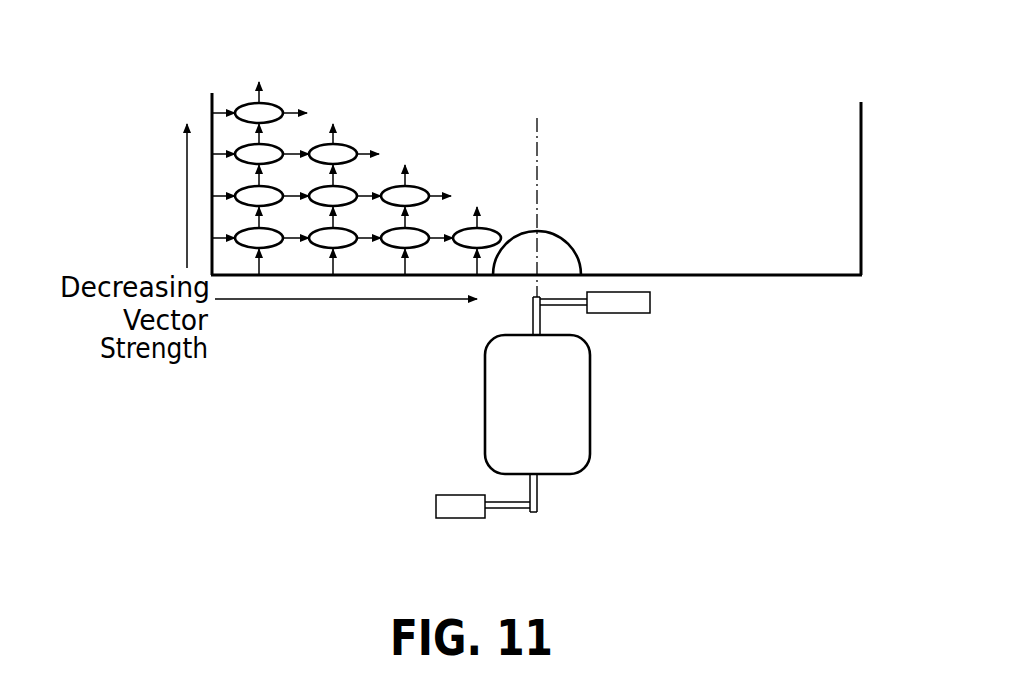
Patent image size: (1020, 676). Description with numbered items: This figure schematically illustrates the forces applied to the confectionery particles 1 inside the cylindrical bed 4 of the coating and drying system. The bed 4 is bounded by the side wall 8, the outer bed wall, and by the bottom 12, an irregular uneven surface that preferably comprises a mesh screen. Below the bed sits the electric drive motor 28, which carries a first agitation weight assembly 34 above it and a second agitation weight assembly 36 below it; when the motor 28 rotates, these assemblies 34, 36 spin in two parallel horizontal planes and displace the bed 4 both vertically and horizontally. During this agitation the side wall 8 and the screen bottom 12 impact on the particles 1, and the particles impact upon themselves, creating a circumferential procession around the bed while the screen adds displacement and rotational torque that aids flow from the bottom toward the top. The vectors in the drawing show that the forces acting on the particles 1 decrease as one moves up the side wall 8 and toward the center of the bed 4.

The confectionery particles 1 is at (249, 109).
The cylindrical bed 4 is at (641, 121).
The side wall 8 is at (862, 118).
The bottom 12 is at (769, 291).
The electric drive motor 28 is at (493, 403).
The first agitation weight assembly 34 is at (572, 307).
The second agitation weight assembly 36 is at (498, 508).